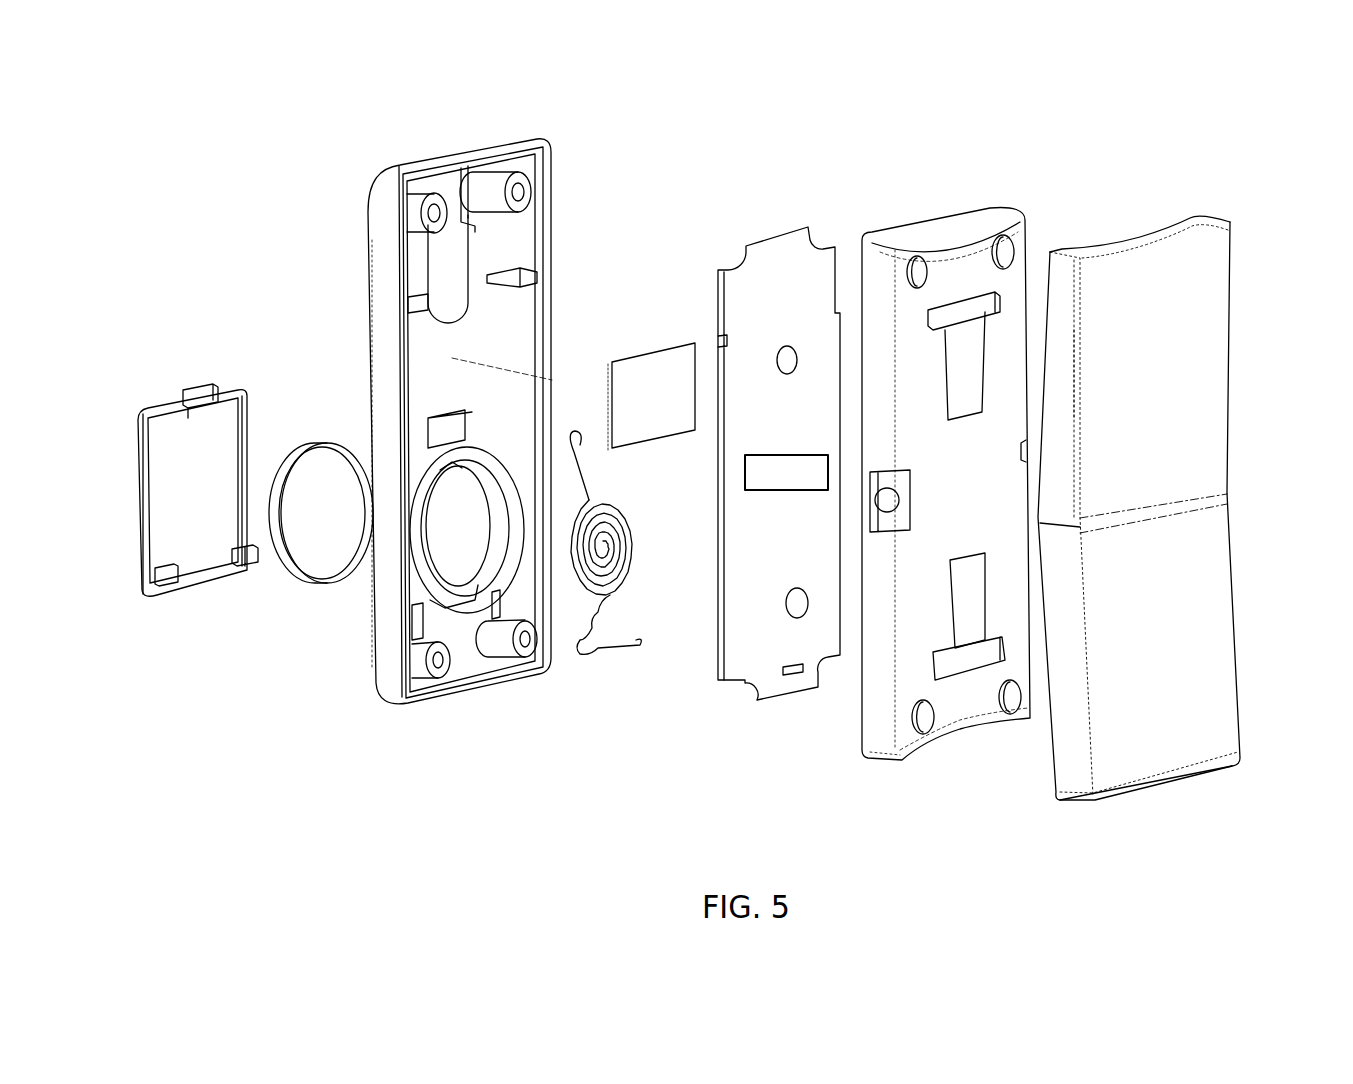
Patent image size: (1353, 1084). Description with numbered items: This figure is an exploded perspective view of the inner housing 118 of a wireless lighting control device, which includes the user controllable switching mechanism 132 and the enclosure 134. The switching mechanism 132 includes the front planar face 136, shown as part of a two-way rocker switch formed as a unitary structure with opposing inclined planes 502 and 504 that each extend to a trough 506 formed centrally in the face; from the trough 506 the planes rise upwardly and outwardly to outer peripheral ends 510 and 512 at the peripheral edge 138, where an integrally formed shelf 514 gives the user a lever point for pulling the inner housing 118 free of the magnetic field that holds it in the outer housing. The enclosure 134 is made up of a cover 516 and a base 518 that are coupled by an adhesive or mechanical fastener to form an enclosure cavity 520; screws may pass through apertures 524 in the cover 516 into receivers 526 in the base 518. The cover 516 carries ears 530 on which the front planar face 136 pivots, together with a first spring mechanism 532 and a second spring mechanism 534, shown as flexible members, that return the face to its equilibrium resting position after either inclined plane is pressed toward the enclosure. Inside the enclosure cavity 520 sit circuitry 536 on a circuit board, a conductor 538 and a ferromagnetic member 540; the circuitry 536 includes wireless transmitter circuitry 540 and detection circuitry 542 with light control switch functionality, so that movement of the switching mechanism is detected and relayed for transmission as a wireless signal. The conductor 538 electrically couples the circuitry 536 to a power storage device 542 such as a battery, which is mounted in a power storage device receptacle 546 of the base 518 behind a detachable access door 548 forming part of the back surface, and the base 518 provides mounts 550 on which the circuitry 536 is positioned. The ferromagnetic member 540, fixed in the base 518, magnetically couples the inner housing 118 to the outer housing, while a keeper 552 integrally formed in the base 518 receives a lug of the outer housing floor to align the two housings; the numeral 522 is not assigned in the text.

The inner housing 118 is at (910, 92).
The user controllable switching mechanism 132 is at (1252, 340).
The enclosure 134 is at (480, 722).
The front planar face 136 is at (1125, 285).
The peripheral edge 138 is at (1070, 755).
The inclined plane 502 is at (1133, 390).
The inclined plane 504 is at (1153, 636).
The trough 506 is at (1202, 495).
The outer peripheral end 510 is at (1205, 230).
The outer peripheral end 512 is at (1165, 788).
The shelf 514 is at (1152, 237).
The cover 516 is at (1000, 208).
The base 518 is at (455, 168).
The enclosure cavity 520 is at (647, 200).
The housing member 522 is at (390, 645).
The apertures 524 is at (1012, 250).
The receivers 526 is at (425, 210).
The ears 530 is at (893, 490).
The first spring mechanism 532 is at (968, 360).
The second spring mechanism 534 is at (968, 595).
The circuitry 536 is at (792, 218).
The conductor 538 is at (730, 515).
The ferromagnetic member 540 is at (668, 340).
The power storage device 542 is at (300, 590).
The power storage device receptacle 546 is at (462, 542).
The access door 548 is at (203, 385).
The mounts 550 is at (520, 284).
The keeper 552 is at (440, 312).